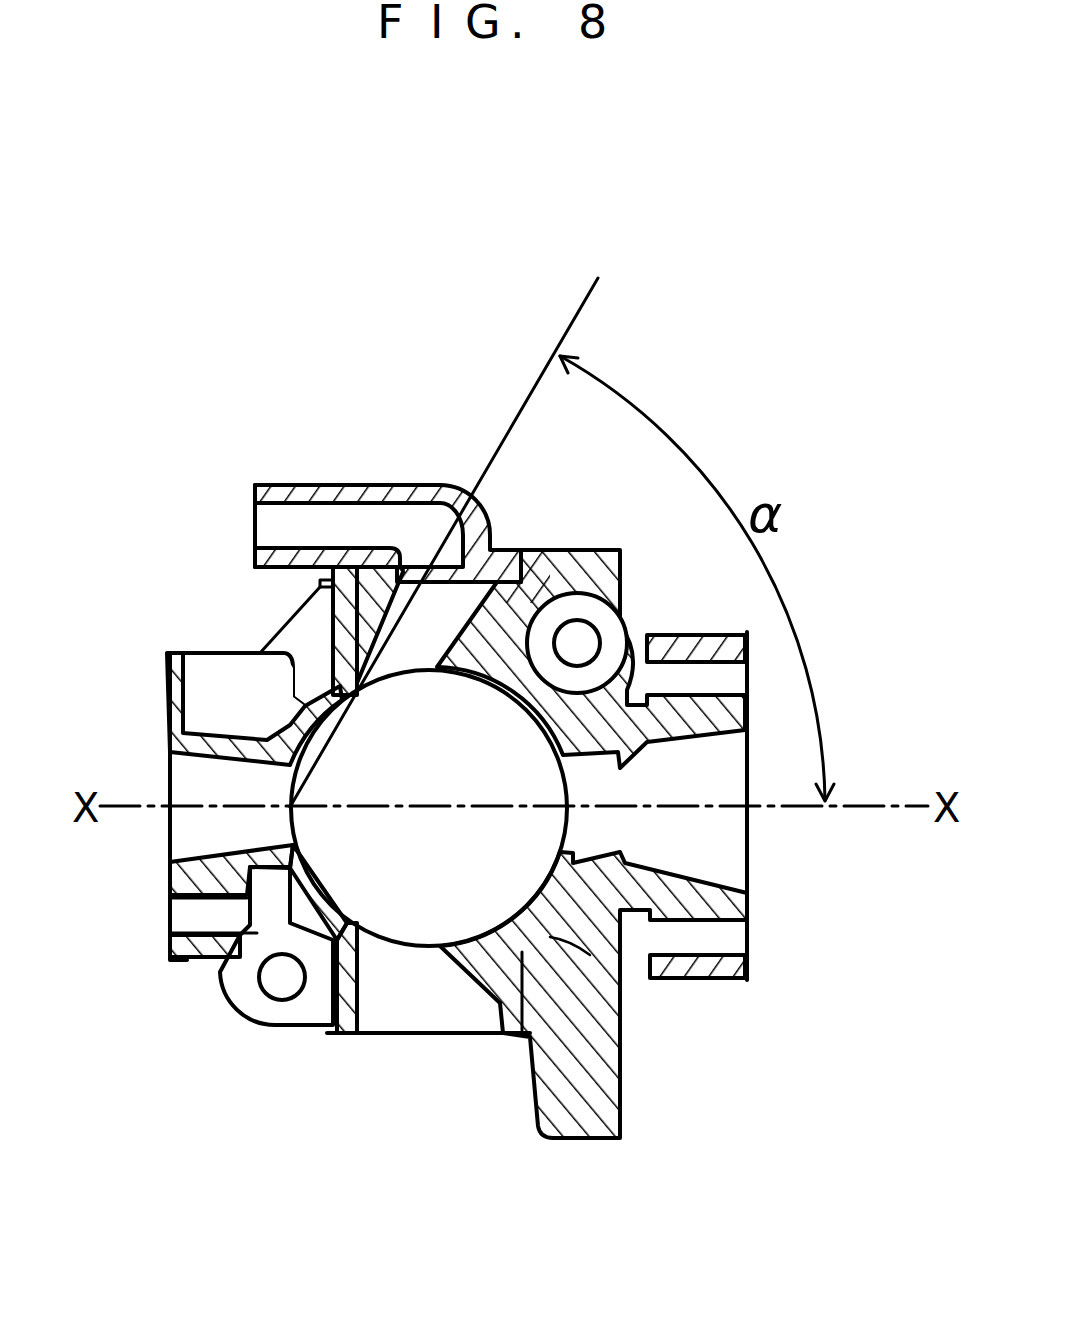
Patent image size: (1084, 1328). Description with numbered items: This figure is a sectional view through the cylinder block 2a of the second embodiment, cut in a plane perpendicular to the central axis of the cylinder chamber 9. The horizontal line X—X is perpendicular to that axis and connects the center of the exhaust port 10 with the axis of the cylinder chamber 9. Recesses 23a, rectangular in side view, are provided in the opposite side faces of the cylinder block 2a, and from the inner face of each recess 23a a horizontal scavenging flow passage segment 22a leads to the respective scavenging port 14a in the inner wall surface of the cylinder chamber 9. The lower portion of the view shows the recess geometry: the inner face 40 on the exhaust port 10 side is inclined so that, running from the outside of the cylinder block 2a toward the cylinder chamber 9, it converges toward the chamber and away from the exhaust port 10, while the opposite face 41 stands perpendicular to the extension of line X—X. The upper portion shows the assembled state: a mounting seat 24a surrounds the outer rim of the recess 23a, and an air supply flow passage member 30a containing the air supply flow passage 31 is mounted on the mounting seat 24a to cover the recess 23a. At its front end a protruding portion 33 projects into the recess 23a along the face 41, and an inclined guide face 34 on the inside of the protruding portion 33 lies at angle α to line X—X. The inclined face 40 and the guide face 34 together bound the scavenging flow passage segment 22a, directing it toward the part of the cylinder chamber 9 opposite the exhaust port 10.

The cylinder block 2a is at (623, 983).
The cylinder chamber 9 is at (385, 888).
The exhaust port 10 is at (567, 820).
The scavenging port 14a is at (398, 945).
The horizontal scavenging flow passage segment 22a is at (573, 552).
The recess 23a is at (430, 597).
The mounting seat 24a is at (330, 537).
The air supply flow passage member 30a is at (362, 483).
The air supply flow passage 31 is at (323, 515).
The protruding portion 33 is at (335, 620).
The guide face 34 is at (390, 650).
The inclined face 40 is at (497, 607).
The face 41 is at (382, 660).